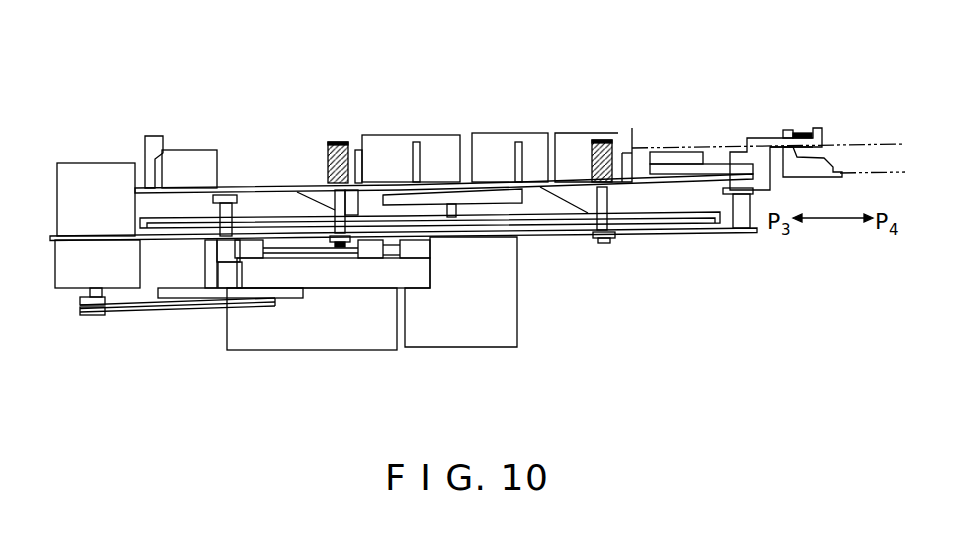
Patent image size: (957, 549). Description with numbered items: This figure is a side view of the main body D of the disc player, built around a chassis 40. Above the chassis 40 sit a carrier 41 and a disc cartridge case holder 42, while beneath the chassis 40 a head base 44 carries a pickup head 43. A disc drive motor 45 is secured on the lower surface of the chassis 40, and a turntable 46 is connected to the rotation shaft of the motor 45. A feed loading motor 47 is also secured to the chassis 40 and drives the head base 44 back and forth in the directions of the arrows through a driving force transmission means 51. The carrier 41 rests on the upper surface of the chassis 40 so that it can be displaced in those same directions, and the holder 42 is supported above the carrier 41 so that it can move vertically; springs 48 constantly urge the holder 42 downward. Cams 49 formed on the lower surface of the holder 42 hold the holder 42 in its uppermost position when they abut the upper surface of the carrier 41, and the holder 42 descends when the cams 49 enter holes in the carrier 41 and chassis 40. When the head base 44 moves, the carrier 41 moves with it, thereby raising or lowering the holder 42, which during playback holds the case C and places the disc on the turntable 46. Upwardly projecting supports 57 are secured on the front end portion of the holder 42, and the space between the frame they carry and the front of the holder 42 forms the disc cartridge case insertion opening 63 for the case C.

The chassis 40 is at (718, 233).
The carrier 41 is at (652, 228).
The disc cartridge case holder 42 is at (240, 187).
The pickup head 43 is at (277, 352).
The head base 44 is at (342, 277).
The disc drive motor 45 is at (518, 318).
The turntable 46 is at (490, 192).
The feed loading motor 47 is at (90, 163).
The springs 48 is at (320, 142).
The cams 49 is at (320, 202).
The driving force transmission means 51 is at (181, 320).
The supports 57 is at (795, 156).
The disc cartridge case insertion opening 63 is at (827, 158).
The main body D is at (452, 125).
The case C is at (858, 138).